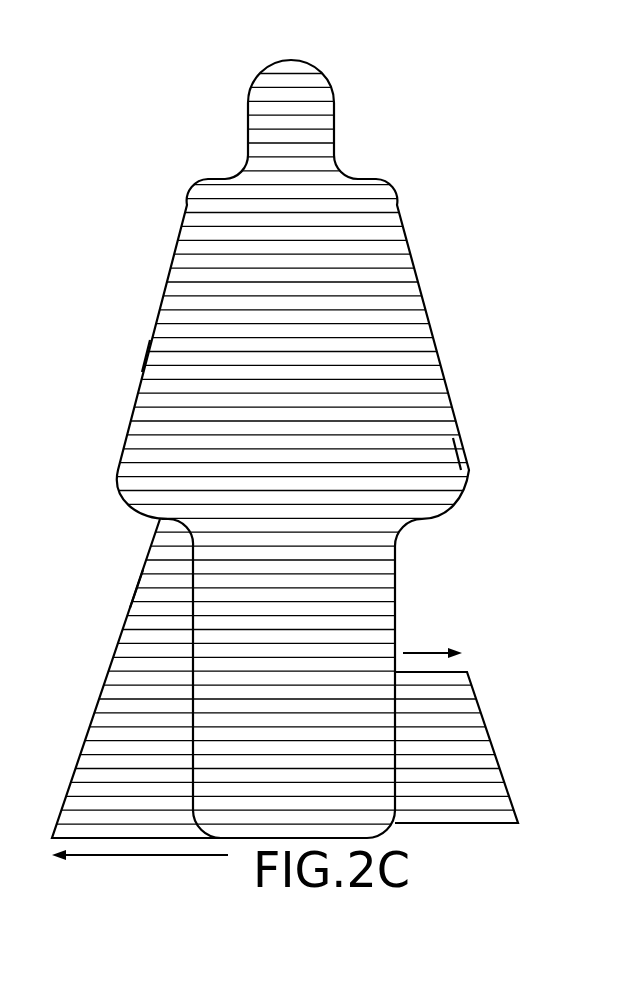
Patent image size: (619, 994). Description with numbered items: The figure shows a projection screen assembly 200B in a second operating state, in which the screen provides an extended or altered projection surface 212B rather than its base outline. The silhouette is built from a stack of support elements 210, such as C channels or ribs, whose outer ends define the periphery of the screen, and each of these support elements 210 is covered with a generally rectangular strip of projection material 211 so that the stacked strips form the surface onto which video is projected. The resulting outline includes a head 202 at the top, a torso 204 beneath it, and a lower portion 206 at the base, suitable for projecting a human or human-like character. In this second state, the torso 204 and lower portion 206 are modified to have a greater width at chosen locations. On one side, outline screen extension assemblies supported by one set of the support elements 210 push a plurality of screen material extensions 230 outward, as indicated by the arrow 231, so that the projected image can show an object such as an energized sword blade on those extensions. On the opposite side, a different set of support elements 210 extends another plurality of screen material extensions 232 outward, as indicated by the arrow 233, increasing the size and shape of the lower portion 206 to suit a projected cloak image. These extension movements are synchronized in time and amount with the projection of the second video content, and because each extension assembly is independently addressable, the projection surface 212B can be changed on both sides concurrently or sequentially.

The projection screen assembly in second state 200B is at (137, 150).
The head 202 is at (378, 135).
The torso 204 is at (452, 330).
The lower portion 206 is at (484, 548).
The support elements 210 is at (136, 342).
The strips of projection material 211 is at (453, 440).
The altered projection surface 212B is at (385, 235).
The screen material extensions 230 is at (142, 575).
The arrow indicating extension 231 is at (152, 856).
The screen material extensions 232 is at (470, 681).
The arrow indicating extension 233 is at (425, 653).